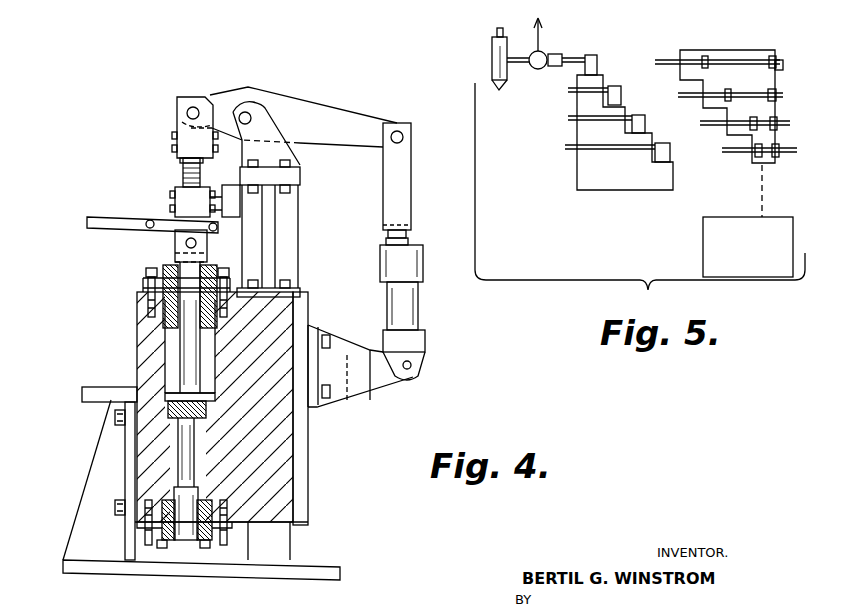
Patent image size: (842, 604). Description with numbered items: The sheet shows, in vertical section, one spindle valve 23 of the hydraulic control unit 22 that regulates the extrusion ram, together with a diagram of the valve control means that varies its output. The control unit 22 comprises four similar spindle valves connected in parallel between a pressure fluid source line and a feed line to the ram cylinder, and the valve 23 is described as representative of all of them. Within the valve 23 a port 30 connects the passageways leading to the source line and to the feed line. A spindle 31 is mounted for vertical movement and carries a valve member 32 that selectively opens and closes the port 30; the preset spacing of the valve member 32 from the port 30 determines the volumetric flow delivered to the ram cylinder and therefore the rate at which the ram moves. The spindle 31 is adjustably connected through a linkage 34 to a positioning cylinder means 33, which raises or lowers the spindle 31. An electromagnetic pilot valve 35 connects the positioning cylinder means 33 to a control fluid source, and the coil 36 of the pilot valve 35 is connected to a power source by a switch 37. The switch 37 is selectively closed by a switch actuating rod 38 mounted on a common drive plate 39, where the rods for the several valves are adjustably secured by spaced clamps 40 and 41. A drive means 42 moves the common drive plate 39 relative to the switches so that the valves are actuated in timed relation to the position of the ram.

In FIG. 4, the control unit 22 is at (65, 576).
In FIG. 4, the spindle valve 23 is at (182, 93).
In FIG. 4, the port 30 is at (202, 393).
In FIG. 4, the spindle 31 is at (186, 458).
In FIG. 4, the valve member 32 is at (174, 167).
In FIG. 4, the positioning cylinder means 33 is at (413, 310).
In FIG. 5, the positioning cylinder means 33 is at (492, 53).
In FIG. 4, the linkage 34 is at (360, 112).
In FIG. 5, the electromagnetic pilot valve 35 is at (545, 53).
In FIG. 5, the coil 36 is at (554, 66).
In FIG. 5, the switch 37 is at (592, 60).
In FIG. 5, the switch actuating rod 38 is at (672, 55).
In FIG. 5, the common drive plate 39 is at (742, 52).
In FIG. 5, the clamp 40 is at (702, 65).
In FIG. 5, the clamp 41 is at (778, 70).
In FIG. 5, the drive means 42 is at (703, 241).